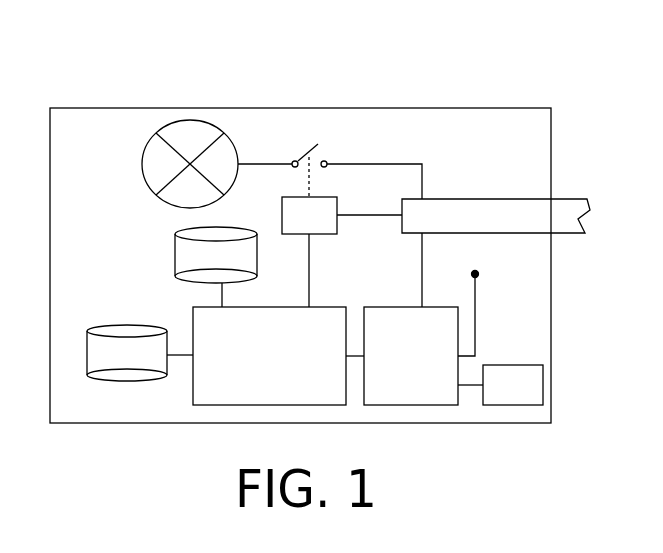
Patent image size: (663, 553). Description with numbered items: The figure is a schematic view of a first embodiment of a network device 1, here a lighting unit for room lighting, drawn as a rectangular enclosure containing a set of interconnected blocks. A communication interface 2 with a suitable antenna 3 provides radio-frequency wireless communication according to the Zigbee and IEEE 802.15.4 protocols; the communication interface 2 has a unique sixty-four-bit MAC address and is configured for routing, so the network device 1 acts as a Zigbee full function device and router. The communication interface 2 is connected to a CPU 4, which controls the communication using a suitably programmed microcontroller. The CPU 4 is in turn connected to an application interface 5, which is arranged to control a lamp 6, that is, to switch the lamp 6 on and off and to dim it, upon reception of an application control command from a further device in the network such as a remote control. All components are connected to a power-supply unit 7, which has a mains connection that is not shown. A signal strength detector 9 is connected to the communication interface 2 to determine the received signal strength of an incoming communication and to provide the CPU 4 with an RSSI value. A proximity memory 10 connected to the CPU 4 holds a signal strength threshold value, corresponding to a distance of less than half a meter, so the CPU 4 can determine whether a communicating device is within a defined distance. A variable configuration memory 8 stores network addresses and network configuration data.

The network device 1 is at (160, 108).
The communication interface 2 is at (403, 370).
The antenna 3 is at (475, 302).
The CPU 4 is at (262, 369).
The application interface 5 is at (301, 228).
The lamp 6 is at (237, 166).
The power-supply unit 7 is at (474, 230).
The variable configuration memory 8 is at (119, 367).
The signal strength detector 9 is at (505, 397).
The proximity memory 10 is at (200, 270).